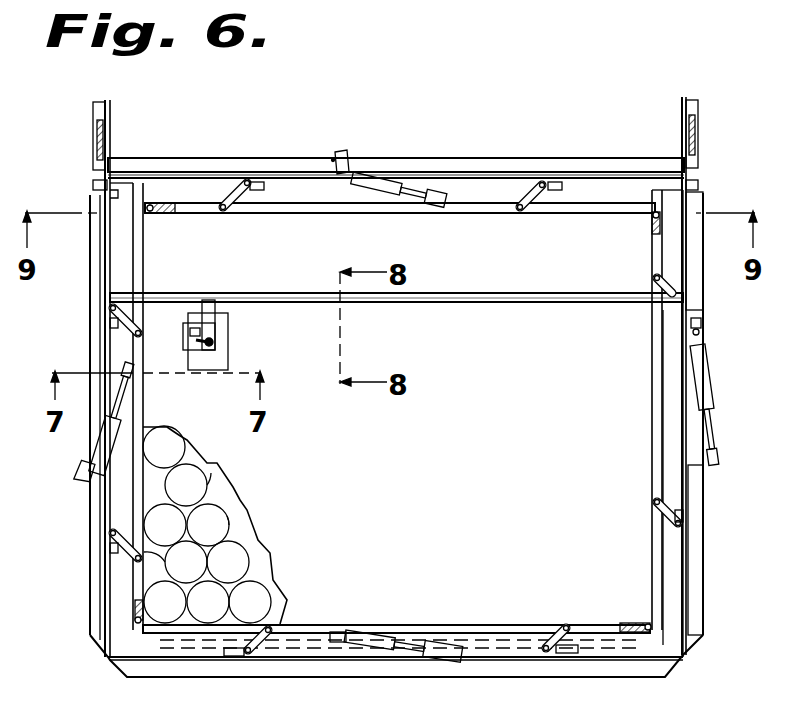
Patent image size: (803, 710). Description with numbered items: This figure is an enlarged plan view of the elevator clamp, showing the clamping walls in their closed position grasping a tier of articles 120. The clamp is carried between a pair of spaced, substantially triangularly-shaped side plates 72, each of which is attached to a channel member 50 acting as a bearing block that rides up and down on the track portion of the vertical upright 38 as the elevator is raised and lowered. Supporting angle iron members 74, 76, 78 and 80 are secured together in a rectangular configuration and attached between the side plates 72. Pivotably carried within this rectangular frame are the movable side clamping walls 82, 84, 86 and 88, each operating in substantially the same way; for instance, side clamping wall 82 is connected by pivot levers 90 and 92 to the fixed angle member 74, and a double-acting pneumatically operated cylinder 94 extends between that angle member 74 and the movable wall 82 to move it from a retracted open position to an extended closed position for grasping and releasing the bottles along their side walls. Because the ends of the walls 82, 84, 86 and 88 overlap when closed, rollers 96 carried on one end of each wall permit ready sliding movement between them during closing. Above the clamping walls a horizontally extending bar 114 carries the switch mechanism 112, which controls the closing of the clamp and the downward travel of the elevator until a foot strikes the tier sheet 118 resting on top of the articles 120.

The vertical upright 38 is at (96, 136).
The channel member 50 is at (94, 114).
The side plate 72 is at (111, 146).
The angle iron member 74 is at (702, 552).
The angle iron member 76 is at (530, 676).
The angle iron member 78 is at (496, 157).
The angle iron member 80 is at (94, 548).
The side clamping wall 82 is at (650, 436).
The side clamping wall 84 is at (464, 220).
The side clamping wall 86 is at (468, 626).
The side clamping wall 88 is at (143, 412).
The pivot lever 90 is at (655, 519).
The pivot lever 92 is at (226, 182).
The double-acting pneumatically operated cylinder 94 is at (378, 169).
The roller 96 is at (150, 214).
The switch mechanism 112 is at (236, 333).
The horizontally extending bar 114 is at (483, 303).
The tier sheet 118 is at (442, 495).
The articles 120 is at (248, 516).